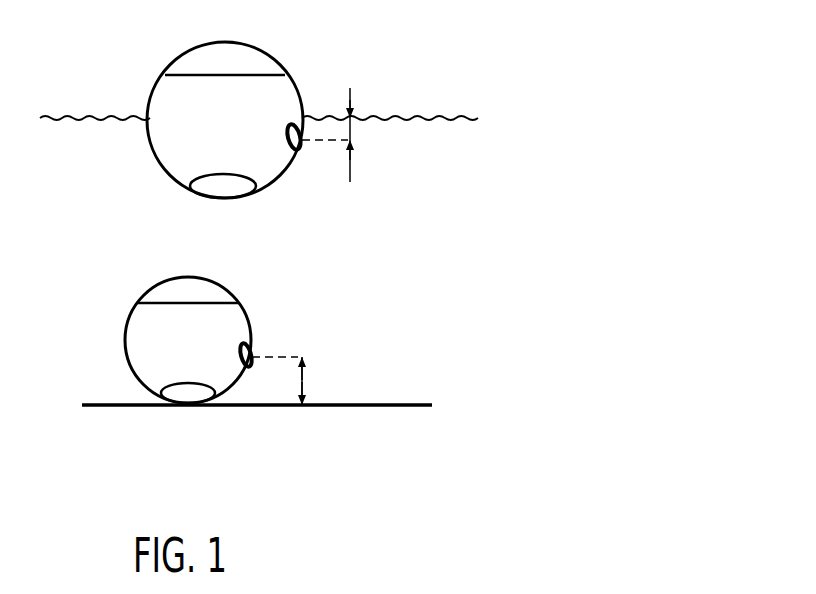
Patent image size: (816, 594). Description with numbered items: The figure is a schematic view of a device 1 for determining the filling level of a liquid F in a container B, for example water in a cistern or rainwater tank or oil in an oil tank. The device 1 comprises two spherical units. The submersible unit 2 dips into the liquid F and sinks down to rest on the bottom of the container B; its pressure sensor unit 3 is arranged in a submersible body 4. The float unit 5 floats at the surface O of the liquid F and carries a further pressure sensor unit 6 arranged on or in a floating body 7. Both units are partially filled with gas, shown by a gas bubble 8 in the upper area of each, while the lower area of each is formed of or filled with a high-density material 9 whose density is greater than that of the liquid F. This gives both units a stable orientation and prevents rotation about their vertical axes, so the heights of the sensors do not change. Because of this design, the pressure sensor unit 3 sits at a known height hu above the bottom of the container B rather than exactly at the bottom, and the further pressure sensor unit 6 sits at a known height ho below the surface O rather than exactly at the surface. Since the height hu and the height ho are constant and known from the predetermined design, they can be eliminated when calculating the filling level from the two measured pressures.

The device 1 is at (456, 252).
The submersible unit 2 is at (145, 333).
The pressure sensor unit 3 is at (255, 348).
The submersible body 4 is at (122, 318).
The float unit 5 is at (170, 108).
The further pressure sensor unit 6 is at (291, 127).
The floating body 7 is at (297, 122).
The gas bubble 8 is at (208, 60).
The material 9 is at (232, 184).
The surface O is at (447, 118).
The liquid F is at (180, 232).
The container B is at (432, 405).
The height ho is at (344, 139).
The height hu is at (297, 381).